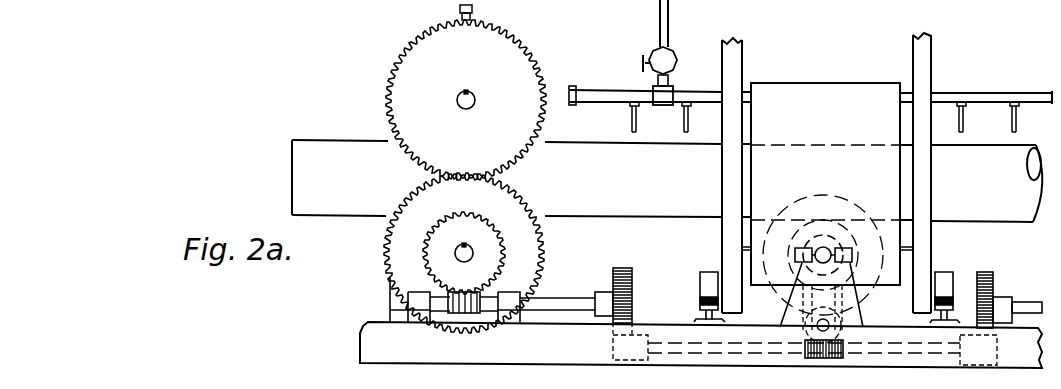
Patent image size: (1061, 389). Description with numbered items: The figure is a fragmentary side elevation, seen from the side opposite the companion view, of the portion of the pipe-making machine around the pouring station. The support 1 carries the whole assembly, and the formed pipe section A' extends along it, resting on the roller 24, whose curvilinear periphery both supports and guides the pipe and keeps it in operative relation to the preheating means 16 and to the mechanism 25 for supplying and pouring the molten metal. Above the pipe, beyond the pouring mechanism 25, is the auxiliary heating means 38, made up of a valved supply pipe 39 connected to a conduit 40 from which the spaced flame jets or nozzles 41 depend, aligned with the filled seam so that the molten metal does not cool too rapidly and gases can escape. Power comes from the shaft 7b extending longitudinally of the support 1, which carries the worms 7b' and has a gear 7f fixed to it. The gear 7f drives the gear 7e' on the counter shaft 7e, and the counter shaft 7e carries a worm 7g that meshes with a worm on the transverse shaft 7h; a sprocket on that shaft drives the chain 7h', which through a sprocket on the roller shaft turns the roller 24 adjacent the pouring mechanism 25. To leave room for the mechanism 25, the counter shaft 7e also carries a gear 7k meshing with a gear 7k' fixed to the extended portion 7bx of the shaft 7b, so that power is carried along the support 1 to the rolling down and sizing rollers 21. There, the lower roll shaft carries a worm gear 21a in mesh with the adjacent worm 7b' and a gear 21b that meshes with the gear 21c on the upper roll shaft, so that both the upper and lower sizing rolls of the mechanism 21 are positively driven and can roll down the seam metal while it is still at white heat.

The support 1 is at (360, 340).
The pipe section A' is at (667, 197).
The rolling down and sizing rollers 21 is at (430, 65).
The worm gear 21a is at (487, 247).
The gear 21b is at (518, 208).
The gear 21c is at (520, 63).
The worm 7b' is at (455, 317).
The extended shaft portion 7bx is at (563, 300).
The gear 7k' is at (632, 295).
The gear 7k is at (632, 319).
The counter shaft 7e is at (647, 332).
The gear 7e' is at (992, 350).
The worm 7g is at (870, 350).
The gear 7f is at (984, 271).
The shaft 7b is at (1017, 297).
The transverse shaft 7h is at (851, 332).
The chain 7h' is at (787, 315).
The roller 24 is at (858, 287).
The mechanism for supplying and pouring molten metal 25 is at (825, 171).
The auxiliary heating means 38 is at (677, 84).
The valved supply pipe 39 is at (658, 55).
The conduit 40 is at (594, 96).
The flame jets or nozzles 41 is at (668, 124).
The preheating means 16 is at (988, 103).